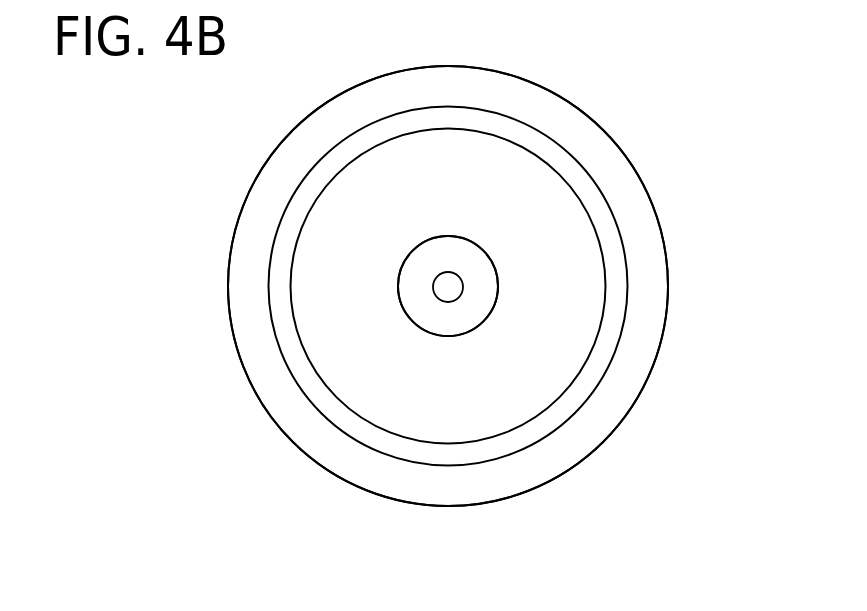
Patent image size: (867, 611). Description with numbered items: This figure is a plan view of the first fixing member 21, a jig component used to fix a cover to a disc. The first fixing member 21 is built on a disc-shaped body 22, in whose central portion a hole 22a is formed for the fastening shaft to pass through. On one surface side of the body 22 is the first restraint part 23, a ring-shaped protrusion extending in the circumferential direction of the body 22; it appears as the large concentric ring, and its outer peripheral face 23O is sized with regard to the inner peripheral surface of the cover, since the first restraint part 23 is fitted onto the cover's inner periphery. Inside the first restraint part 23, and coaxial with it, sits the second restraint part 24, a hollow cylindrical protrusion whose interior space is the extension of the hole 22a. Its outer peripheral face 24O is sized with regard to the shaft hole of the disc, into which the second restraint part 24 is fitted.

The first fixing member 21 is at (633, 162).
The body 22 is at (658, 217).
The hole 22a is at (435, 284).
The first restraint part 23 is at (628, 272).
The outer peripheral face 23O is at (628, 298).
The second restraint part 24 is at (480, 328).
The outer peripheral face 24O is at (442, 337).